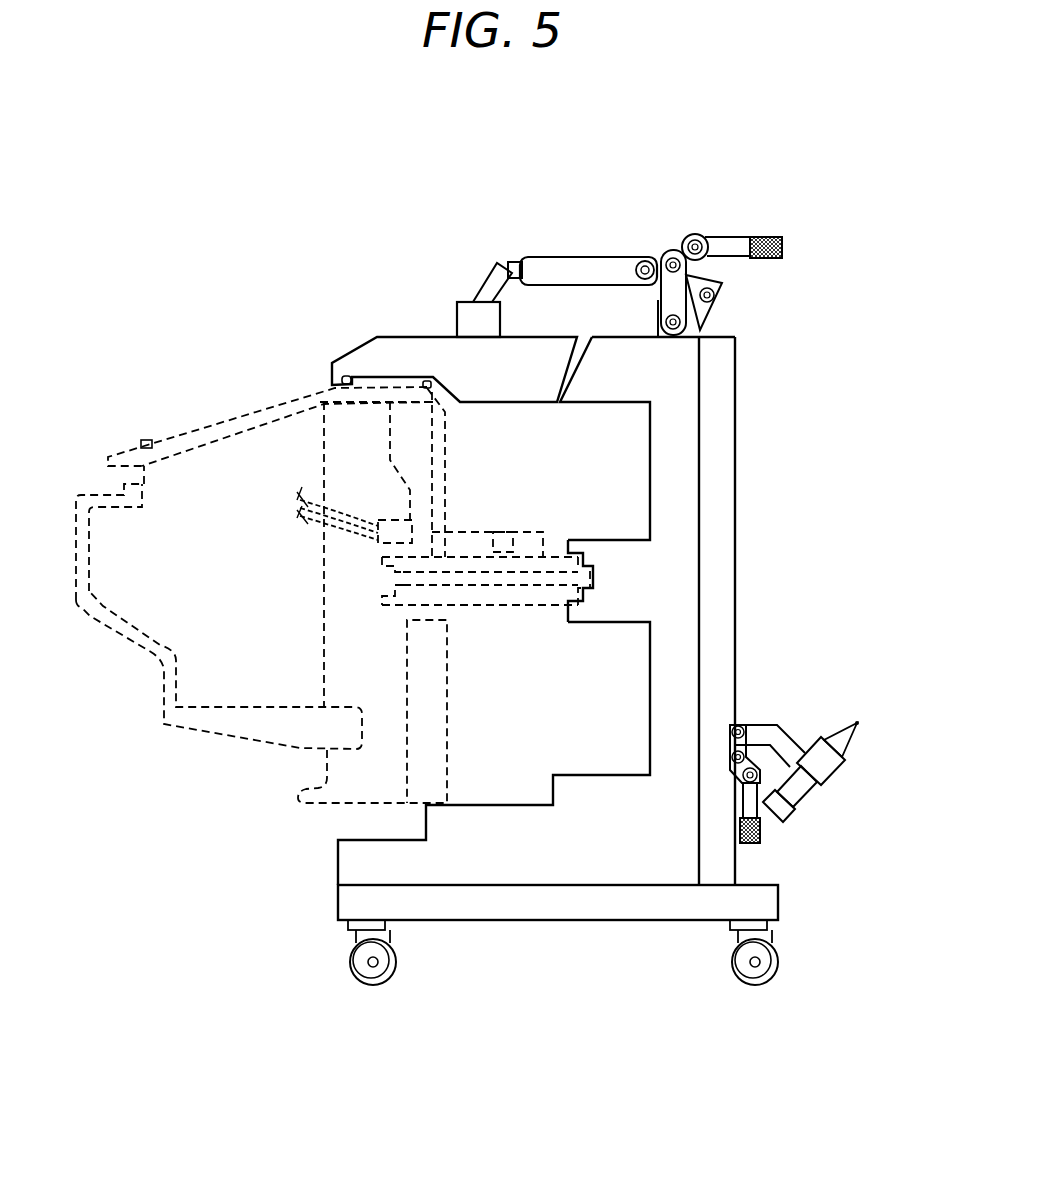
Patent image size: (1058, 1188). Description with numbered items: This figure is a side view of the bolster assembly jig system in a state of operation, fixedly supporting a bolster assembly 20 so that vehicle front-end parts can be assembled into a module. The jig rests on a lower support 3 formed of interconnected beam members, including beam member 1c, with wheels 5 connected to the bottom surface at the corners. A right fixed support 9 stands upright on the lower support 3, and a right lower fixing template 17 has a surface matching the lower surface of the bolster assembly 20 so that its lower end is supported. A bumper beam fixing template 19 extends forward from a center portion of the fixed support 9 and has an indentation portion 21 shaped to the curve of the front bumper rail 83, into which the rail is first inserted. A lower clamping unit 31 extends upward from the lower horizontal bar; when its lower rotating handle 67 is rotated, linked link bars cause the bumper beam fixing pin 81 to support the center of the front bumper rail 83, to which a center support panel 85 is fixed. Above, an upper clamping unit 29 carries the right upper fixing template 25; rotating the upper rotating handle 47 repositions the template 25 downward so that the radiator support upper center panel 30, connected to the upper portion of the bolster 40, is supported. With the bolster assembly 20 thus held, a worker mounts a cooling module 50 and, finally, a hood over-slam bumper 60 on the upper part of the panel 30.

The lower support 3 is at (606, 966).
The wheels 5 is at (375, 975).
The right fixed support 9 is at (735, 563).
The right lower fixing template 17 is at (472, 870).
The beam member 1c is at (547, 917).
The bumper beam fixing template 19 is at (622, 550).
The indentation portion 21 is at (582, 583).
The right upper fixing template 25 is at (402, 347).
The upper clamping unit 29 is at (619, 239).
The upper rotating handle 47 is at (740, 260).
The lower clamping unit 31 is at (804, 756).
The bumper beam fixing pin 81 is at (817, 773).
The lower rotating handle 67 is at (760, 836).
The bolster assembly 20 is at (261, 595).
The radiator support upper center panel 30 is at (239, 436).
The bolster 40 is at (221, 706).
The hood over-slam bumper 60 is at (146, 440).
The cooling module 50 is at (443, 510).
The center support panel 85 is at (513, 538).
The front bumper rail 83 is at (508, 592).